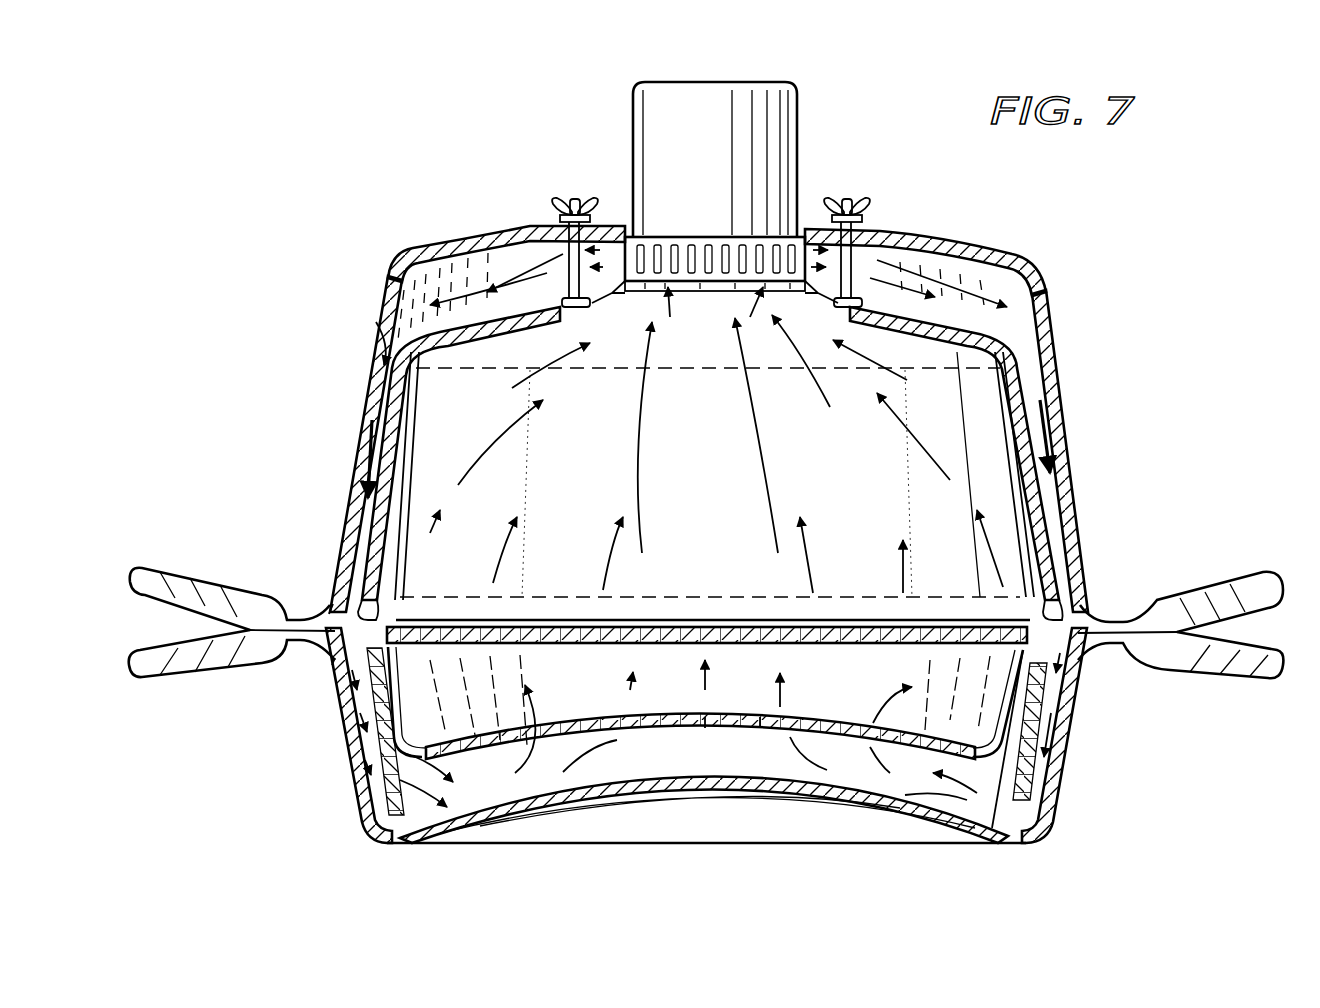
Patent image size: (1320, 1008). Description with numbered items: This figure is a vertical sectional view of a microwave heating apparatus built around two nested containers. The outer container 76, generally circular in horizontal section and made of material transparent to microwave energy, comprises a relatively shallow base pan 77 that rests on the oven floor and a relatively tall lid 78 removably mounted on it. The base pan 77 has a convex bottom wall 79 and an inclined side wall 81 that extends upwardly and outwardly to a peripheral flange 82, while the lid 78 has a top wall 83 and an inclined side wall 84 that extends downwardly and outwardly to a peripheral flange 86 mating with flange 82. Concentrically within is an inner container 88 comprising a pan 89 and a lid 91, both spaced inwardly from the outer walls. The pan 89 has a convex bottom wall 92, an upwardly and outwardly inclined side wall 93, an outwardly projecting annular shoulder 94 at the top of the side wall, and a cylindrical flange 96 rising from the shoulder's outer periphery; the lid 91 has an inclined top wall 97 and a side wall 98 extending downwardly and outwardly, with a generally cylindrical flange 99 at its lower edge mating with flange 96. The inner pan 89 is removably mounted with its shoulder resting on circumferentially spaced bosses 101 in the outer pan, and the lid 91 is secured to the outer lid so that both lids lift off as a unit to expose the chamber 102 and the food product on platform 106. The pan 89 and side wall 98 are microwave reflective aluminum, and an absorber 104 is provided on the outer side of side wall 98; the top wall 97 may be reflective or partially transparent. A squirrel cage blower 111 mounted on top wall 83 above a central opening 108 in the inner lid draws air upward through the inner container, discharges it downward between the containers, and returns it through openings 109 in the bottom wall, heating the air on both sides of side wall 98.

The outer container 76 is at (390, 315).
The base pan 77 is at (1077, 731).
The lid 78 is at (1062, 382).
The bottom wall 79 is at (757, 790).
The side wall 81 is at (350, 768).
The peripheral flange 82 is at (297, 648).
The top wall 83 is at (962, 238).
The side wall 84 is at (360, 435).
The peripheral flange 86 is at (308, 617).
The inner container 88 is at (418, 505).
The pan 89 is at (602, 684).
The lid 91 is at (975, 333).
The bottom wall 92 is at (810, 718).
The side wall 93 is at (1010, 713).
The annular shoulder 94 is at (1022, 614).
The cylindrical flange 96 is at (1068, 613).
The top wall 97 is at (876, 312).
The side wall 98 is at (1022, 433).
The cylindrical flange 99 is at (437, 605).
The bosses 101 is at (338, 665).
The chamber 102 is at (738, 486).
The absorber 104 is at (1066, 512).
The platform 106 is at (622, 628).
The central opening 108 is at (772, 292).
The openings 109 is at (760, 717).
The squirrel cage blower 111 is at (672, 155).